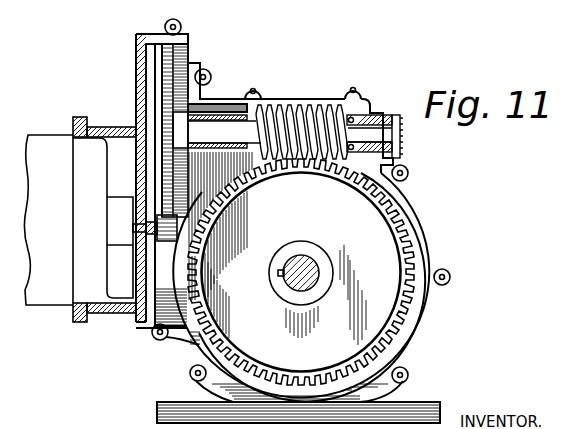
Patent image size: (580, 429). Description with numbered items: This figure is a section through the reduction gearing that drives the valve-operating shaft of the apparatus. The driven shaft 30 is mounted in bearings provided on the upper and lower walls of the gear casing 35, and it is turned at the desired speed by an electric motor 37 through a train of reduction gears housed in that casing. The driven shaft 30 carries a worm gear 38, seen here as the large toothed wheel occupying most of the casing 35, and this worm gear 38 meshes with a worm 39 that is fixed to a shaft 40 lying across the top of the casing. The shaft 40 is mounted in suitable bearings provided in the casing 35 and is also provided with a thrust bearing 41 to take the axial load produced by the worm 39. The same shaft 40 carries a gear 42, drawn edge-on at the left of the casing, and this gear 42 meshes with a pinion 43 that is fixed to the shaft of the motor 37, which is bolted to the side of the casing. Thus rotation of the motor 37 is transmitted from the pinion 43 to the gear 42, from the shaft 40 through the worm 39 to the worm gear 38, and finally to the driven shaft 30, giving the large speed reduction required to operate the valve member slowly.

The driven shaft 30 is at (305, 257).
The gear casing 35 is at (424, 213).
The electric motor 37 is at (90, 219).
The worm gear 38 is at (403, 255).
The worm 39 is at (312, 112).
The shaft 40 is at (378, 128).
The thrust bearing 41 is at (360, 110).
The gear 42 is at (182, 62).
The pinion 43 is at (152, 244).